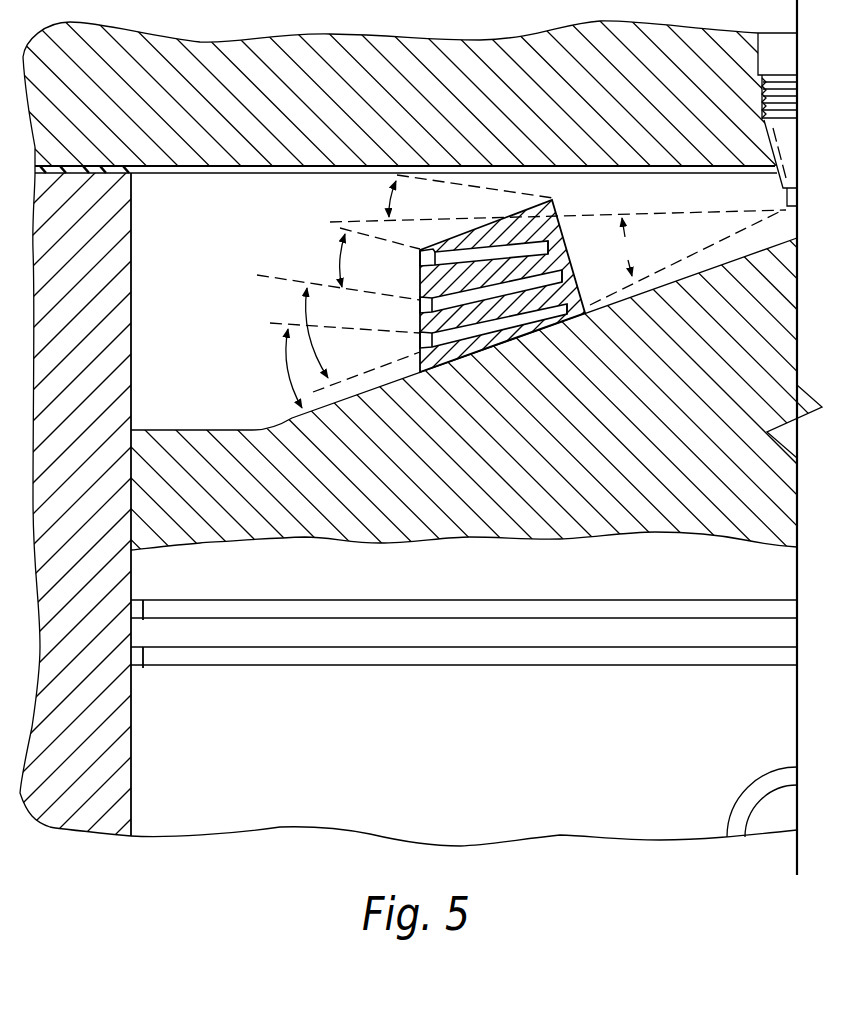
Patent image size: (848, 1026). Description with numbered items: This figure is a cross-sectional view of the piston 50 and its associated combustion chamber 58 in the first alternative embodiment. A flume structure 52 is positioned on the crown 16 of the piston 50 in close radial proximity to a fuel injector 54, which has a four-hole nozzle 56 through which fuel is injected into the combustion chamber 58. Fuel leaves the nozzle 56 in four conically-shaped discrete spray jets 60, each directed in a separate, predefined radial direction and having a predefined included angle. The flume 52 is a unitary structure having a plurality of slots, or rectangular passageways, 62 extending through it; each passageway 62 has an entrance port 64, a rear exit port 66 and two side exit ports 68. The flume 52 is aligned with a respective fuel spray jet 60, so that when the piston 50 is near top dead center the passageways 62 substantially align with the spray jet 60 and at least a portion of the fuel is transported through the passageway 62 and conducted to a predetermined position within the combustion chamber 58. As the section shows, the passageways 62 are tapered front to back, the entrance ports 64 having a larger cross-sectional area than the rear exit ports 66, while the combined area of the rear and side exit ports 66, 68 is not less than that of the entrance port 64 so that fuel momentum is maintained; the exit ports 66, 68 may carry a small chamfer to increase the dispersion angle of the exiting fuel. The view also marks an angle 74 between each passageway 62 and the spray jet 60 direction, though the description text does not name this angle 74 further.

The crown 16 is at (297, 417).
The piston 50 is at (523, 578).
The flume structure 52 is at (424, 513).
The fuel injector 54 is at (792, 148).
The four-hole nozzle 56 is at (795, 205).
The combustion chamber 58 is at (226, 243).
The fuel spray jet 60 is at (636, 211).
The passageway 62 is at (545, 325).
The entrance port 64 is at (540, 252).
The rear exit port 66 is at (540, 222).
The side exit port 68 is at (547, 256).
The groove angle 74 is at (387, 204).